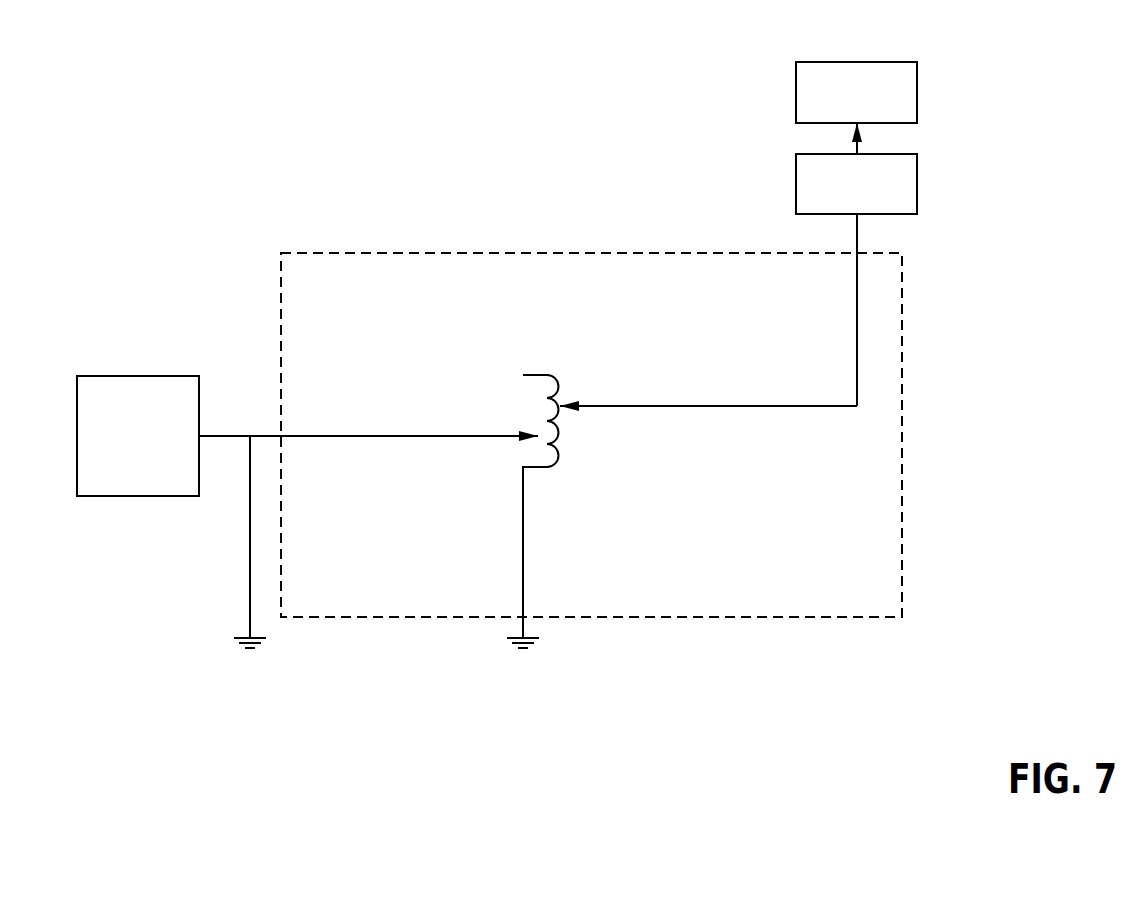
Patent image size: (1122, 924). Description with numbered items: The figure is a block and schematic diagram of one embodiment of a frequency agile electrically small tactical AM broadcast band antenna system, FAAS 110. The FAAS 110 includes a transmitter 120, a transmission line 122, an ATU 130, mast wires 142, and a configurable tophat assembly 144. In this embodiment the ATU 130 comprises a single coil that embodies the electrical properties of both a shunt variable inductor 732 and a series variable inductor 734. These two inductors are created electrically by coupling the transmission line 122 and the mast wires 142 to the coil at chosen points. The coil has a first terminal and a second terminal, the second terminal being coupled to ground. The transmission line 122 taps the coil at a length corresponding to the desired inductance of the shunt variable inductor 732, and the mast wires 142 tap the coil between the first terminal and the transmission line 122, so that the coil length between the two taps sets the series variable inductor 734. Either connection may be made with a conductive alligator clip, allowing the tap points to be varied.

The frequency agile electrically small tactical AM broadcast band antenna system (FA 110 is at (930, 700).
The transmitter 120 is at (133, 396).
The transmission line 122 is at (240, 436).
The ATU 130 is at (877, 594).
The mast wires 142 is at (898, 207).
The configurable tophat assembly 144 is at (886, 70).
The shunt variable inductor 732 is at (538, 467).
The series variable inductor 734 is at (538, 375).